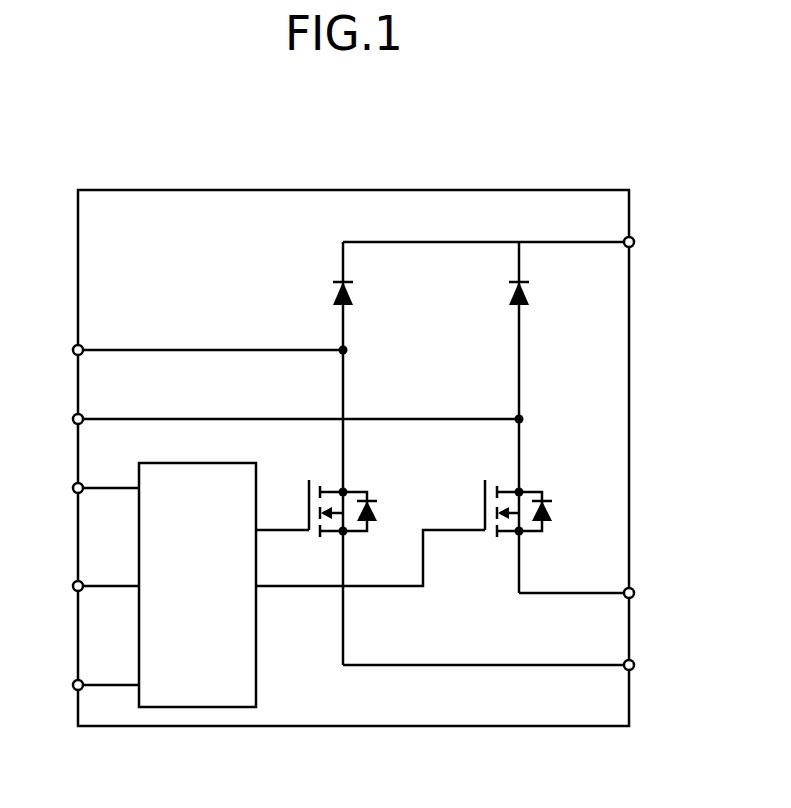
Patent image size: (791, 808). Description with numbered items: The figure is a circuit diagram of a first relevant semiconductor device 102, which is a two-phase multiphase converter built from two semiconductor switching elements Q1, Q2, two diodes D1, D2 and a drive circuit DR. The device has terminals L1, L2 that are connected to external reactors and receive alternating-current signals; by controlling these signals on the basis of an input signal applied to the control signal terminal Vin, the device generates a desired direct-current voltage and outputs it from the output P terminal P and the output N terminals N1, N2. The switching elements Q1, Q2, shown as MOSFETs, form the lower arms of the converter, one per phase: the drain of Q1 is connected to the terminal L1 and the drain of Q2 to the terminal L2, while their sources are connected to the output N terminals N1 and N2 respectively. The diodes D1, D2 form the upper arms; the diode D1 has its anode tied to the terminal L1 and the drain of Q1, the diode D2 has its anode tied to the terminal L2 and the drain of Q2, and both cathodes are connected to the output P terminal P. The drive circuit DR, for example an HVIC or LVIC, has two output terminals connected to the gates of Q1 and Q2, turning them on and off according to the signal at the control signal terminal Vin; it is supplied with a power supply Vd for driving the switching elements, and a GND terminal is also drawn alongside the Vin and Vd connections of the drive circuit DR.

The first relevant semiconductor device 102 is at (543, 135).
The diode D1 is at (336, 280).
The diode D2 is at (514, 280).
The semiconductor switching element Q1 is at (309, 486).
The semiconductor switching element Q2 is at (485, 486).
The drive circuit DR is at (256, 645).
The output P terminal P is at (641, 224).
The terminal L1 is at (196, 333).
The terminal L2 is at (284, 401).
The power supply Vd is at (89, 471).
The ground terminal GND is at (78, 571).
The control signal terminal Vin is at (87, 667).
The output N terminal N1 is at (510, 648).
The output N terminal N2 is at (598, 574).